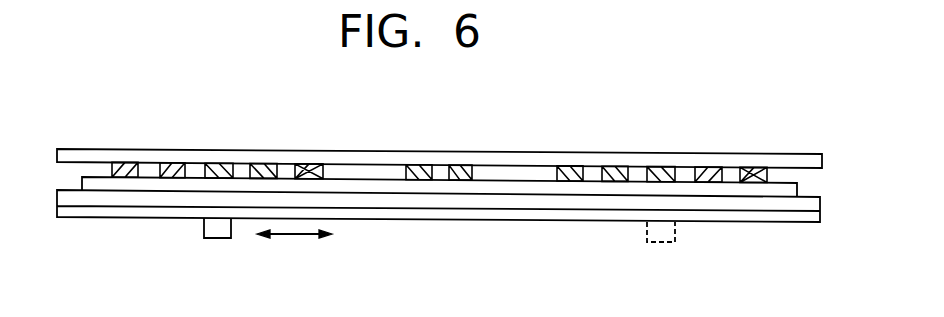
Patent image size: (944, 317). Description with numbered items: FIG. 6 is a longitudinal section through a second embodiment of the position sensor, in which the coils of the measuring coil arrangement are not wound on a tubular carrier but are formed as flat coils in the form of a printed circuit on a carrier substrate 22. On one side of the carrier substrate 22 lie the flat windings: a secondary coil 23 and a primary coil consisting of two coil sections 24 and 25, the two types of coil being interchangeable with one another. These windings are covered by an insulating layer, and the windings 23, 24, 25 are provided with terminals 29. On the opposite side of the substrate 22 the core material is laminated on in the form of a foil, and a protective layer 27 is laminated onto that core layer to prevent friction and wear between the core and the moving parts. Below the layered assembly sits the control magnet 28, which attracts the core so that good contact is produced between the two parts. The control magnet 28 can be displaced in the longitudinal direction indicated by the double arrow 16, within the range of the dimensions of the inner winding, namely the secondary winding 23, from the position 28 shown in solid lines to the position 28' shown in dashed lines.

The double arrow 16 is at (294, 249).
The carrier substrate 22 is at (127, 191).
The secondary coil 23 is at (577, 166).
The primary coil section 24 is at (178, 162).
The primary coil section 25 is at (747, 167).
The protective layer 27 is at (105, 207).
The control magnet 28 is at (220, 248).
The displaced position of control magnet 28' is at (690, 254).
The terminals 29 is at (458, 165).